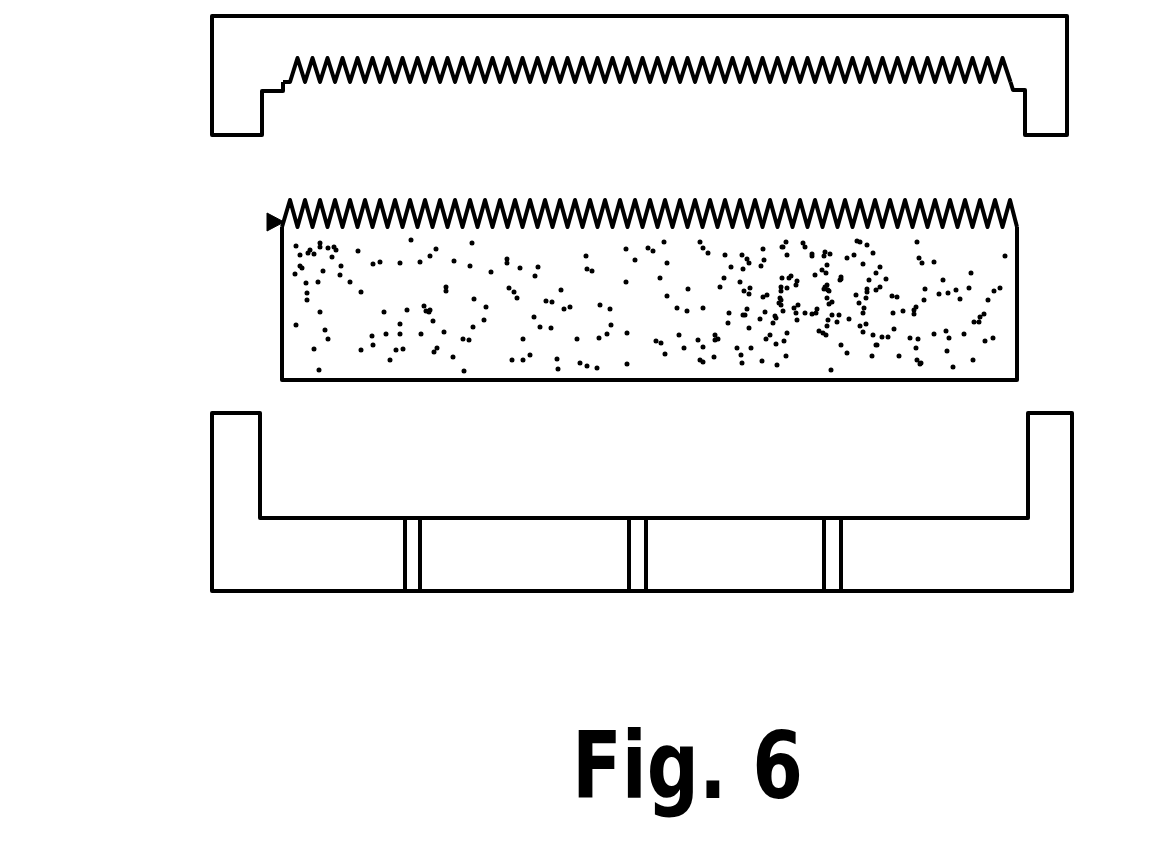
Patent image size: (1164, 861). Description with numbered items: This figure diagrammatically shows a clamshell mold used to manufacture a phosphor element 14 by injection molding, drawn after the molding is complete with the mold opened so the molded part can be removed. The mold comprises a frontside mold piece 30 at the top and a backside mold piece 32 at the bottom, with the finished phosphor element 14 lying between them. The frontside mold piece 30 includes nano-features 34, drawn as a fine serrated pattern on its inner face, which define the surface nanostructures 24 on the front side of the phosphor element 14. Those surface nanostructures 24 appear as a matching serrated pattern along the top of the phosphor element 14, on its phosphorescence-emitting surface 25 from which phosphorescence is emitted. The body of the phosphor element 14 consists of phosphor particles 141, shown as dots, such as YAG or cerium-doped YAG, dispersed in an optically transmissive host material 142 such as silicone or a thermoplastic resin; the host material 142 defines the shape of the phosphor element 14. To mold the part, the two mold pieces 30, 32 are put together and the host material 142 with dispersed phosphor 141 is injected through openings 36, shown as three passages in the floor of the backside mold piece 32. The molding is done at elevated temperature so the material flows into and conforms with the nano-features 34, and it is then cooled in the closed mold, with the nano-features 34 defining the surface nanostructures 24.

The frontside mold piece 30 is at (1069, 50).
The nano-features 34 is at (670, 77).
The phosphor element 14 is at (660, 323).
The surface nanostructures 24 is at (1013, 214).
The phosphor particles 141 is at (320, 312).
The host material 142 is at (982, 304).
The phosphorescence-emitting surface 25 is at (270, 222).
The backside mold piece 32 is at (1068, 499).
The openings 36 is at (826, 638).